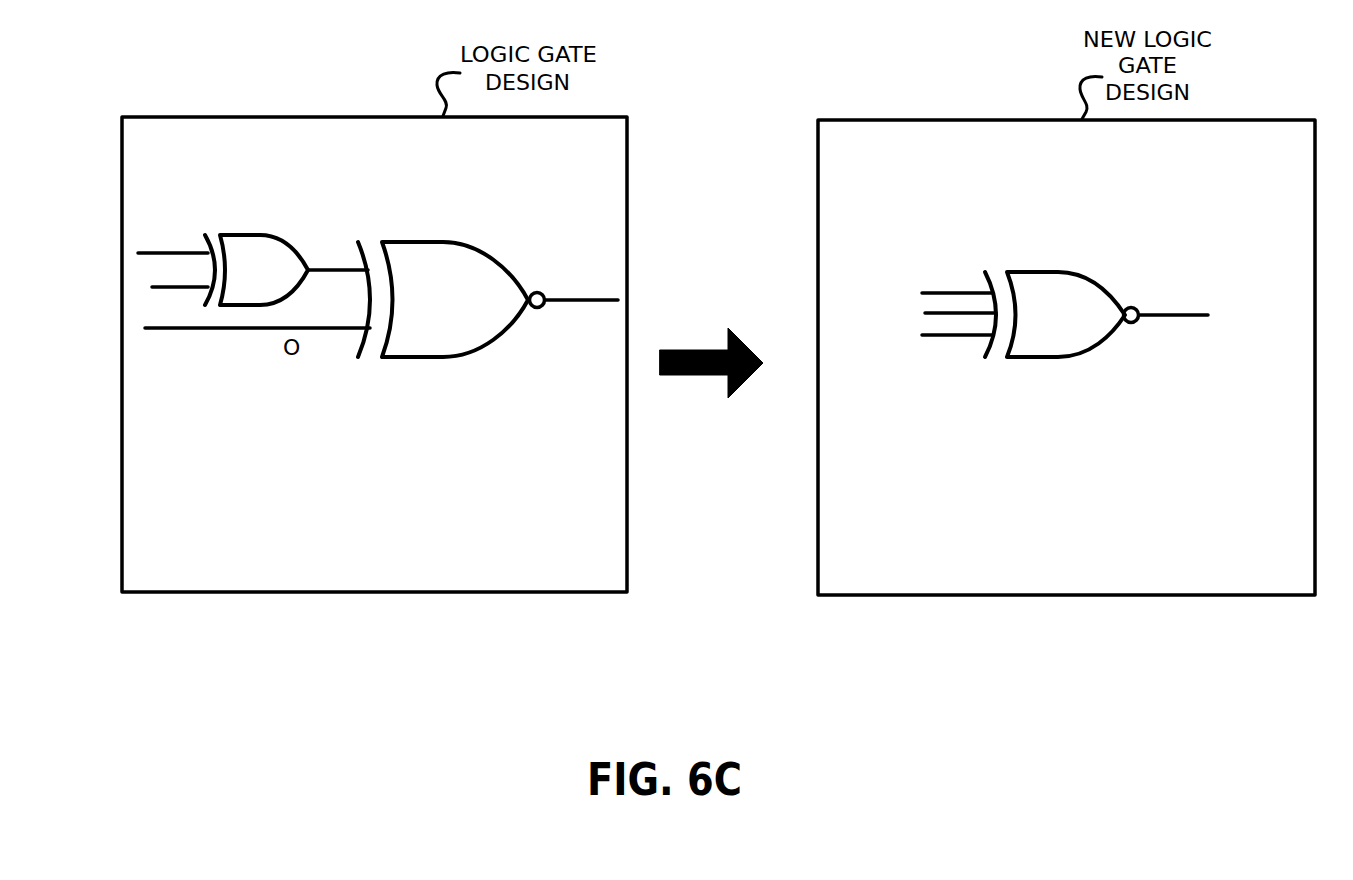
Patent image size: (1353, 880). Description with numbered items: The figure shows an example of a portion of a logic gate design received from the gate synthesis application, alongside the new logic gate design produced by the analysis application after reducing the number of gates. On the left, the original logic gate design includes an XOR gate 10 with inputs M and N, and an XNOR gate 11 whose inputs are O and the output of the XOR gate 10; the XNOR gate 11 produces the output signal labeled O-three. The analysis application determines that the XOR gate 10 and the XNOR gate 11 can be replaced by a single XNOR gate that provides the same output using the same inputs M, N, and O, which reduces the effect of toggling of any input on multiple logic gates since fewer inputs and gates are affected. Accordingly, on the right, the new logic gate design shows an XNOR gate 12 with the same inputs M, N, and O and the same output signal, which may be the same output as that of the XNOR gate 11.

The XOR gate 10 is at (262, 232).
The XNOR gate 11 is at (440, 357).
The XNOR gate 12 is at (1053, 357).